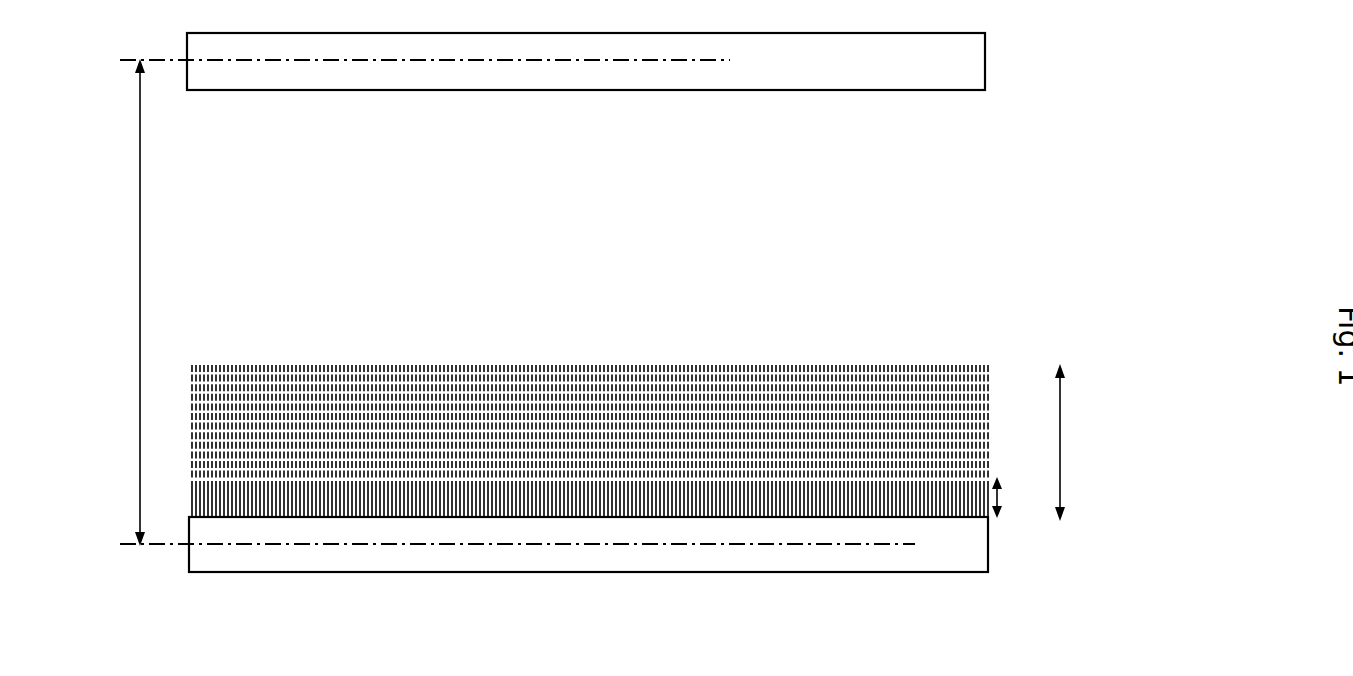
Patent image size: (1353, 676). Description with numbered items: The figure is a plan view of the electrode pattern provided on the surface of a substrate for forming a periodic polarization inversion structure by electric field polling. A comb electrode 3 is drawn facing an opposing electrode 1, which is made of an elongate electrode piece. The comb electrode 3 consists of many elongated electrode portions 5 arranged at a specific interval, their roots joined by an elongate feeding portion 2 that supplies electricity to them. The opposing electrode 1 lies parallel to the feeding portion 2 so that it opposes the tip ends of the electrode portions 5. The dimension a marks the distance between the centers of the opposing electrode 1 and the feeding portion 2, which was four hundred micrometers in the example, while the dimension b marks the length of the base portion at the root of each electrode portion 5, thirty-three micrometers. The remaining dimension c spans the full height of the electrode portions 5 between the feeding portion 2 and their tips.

The opposing electrode 1 is at (985, 49).
The feeding portion 2 is at (988, 554).
The comb electrode 3 is at (934, 359).
The electrode portion 5 is at (980, 364).
The distance between centers of opposing electrode and supply electrode a is at (140, 310).
The length of base portion b is at (998, 492).
The dimension c (fiber layer height) c is at (1060, 433).